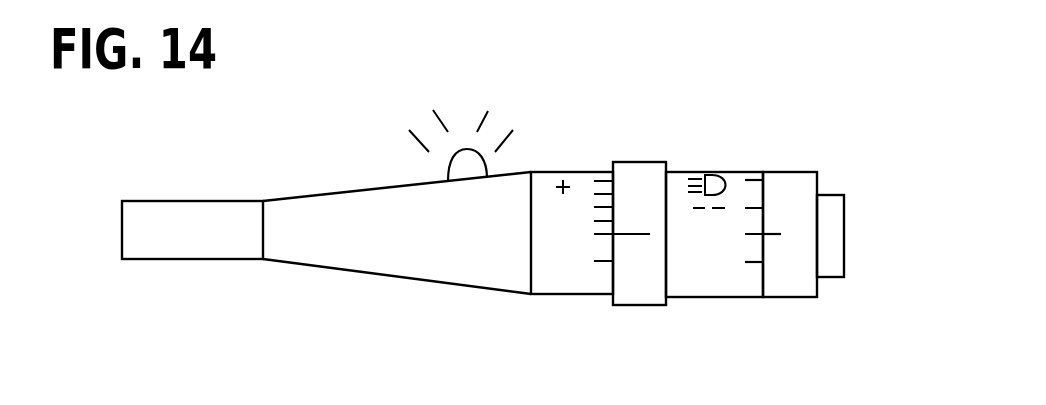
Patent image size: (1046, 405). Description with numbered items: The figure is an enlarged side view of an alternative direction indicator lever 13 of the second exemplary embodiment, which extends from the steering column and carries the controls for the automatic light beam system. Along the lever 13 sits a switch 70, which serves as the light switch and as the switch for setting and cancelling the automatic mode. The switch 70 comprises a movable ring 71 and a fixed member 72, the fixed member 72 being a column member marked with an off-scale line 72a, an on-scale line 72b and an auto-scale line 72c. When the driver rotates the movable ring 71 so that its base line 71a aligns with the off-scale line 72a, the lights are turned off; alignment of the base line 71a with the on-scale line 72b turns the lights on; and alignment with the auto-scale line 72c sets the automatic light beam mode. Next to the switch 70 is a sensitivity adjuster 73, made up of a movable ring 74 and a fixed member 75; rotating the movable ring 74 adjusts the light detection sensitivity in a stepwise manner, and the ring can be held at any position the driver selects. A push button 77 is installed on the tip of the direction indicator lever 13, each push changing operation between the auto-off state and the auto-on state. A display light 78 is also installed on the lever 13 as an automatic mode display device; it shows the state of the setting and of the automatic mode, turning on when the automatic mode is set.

The direction indicator lever 13 is at (348, 192).
The display light 78 is at (480, 154).
The fixed member 75 is at (560, 296).
The sensitivity adjuster 73 is at (636, 229).
The movable ring 74 is at (638, 305).
The switch 70 is at (757, 226).
The fixed member 72 is at (726, 228).
The off-scale line 72a is at (757, 263).
The on-scale line 72b is at (757, 180).
The auto-scale line 72c is at (752, 233).
The movable ring 71 is at (805, 243).
The base line 71a is at (776, 234).
The push button 77 is at (846, 232).